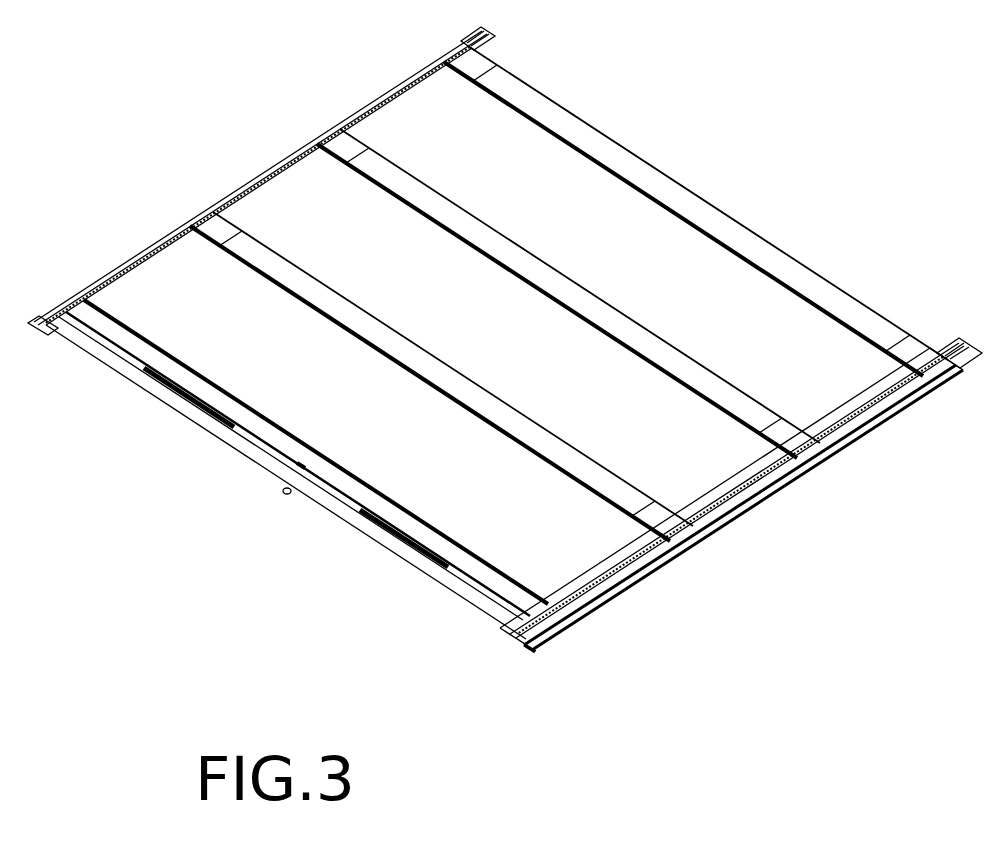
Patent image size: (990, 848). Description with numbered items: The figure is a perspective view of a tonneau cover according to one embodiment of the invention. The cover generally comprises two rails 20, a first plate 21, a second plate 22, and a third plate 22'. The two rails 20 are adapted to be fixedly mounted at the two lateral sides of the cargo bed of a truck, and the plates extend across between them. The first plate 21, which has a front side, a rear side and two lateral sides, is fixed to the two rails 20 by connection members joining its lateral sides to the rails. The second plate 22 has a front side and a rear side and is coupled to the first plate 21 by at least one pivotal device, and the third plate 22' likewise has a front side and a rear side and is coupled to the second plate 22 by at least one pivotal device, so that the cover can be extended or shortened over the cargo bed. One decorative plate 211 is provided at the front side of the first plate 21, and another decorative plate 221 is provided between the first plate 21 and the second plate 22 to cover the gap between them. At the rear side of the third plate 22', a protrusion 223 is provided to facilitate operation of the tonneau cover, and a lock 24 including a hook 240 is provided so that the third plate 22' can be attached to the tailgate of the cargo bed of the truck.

The rail 20 is at (47, 337).
The first plate 21 is at (752, 315).
The decorative plate 211 is at (868, 320).
The second plate 22 is at (508, 383).
The third plate 22' is at (297, 473).
The decorative plate 221 is at (300, 283).
The protrusion 223 is at (207, 423).
The lock 24 is at (302, 470).
The hook 240 is at (287, 493).